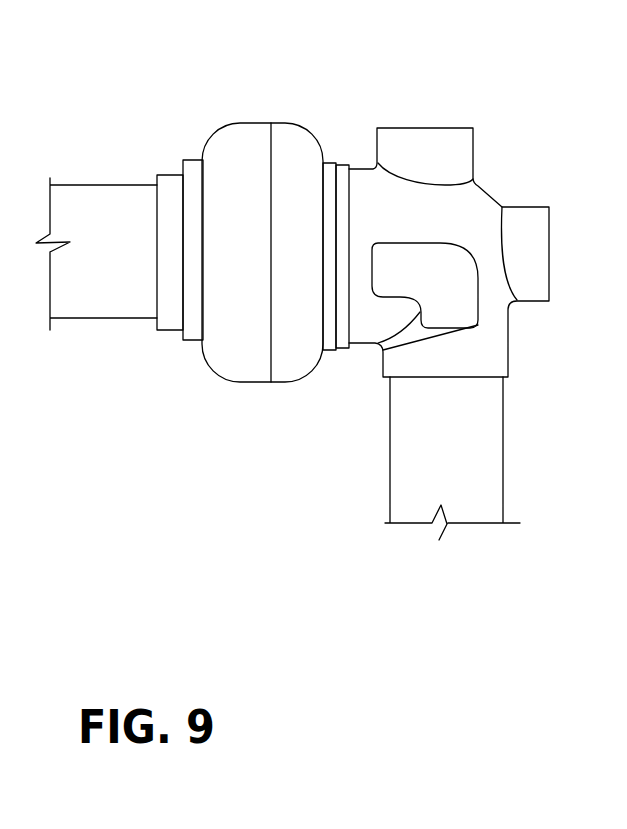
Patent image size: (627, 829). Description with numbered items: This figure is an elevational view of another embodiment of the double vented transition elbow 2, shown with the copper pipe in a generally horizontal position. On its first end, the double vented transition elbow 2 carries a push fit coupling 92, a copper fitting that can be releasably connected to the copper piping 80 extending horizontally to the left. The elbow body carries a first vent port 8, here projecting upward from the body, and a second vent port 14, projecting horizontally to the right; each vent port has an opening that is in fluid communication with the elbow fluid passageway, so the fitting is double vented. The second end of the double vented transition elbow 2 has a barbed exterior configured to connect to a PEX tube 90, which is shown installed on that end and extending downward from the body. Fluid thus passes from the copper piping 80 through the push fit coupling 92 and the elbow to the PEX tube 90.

The double vented transition elbow 2 is at (476, 207).
The first vent port 8 is at (402, 140).
The second vent port 14 is at (531, 283).
The copper piping 80 is at (102, 210).
The PEX tube 90 is at (465, 458).
The push fit coupling 92 is at (242, 153).